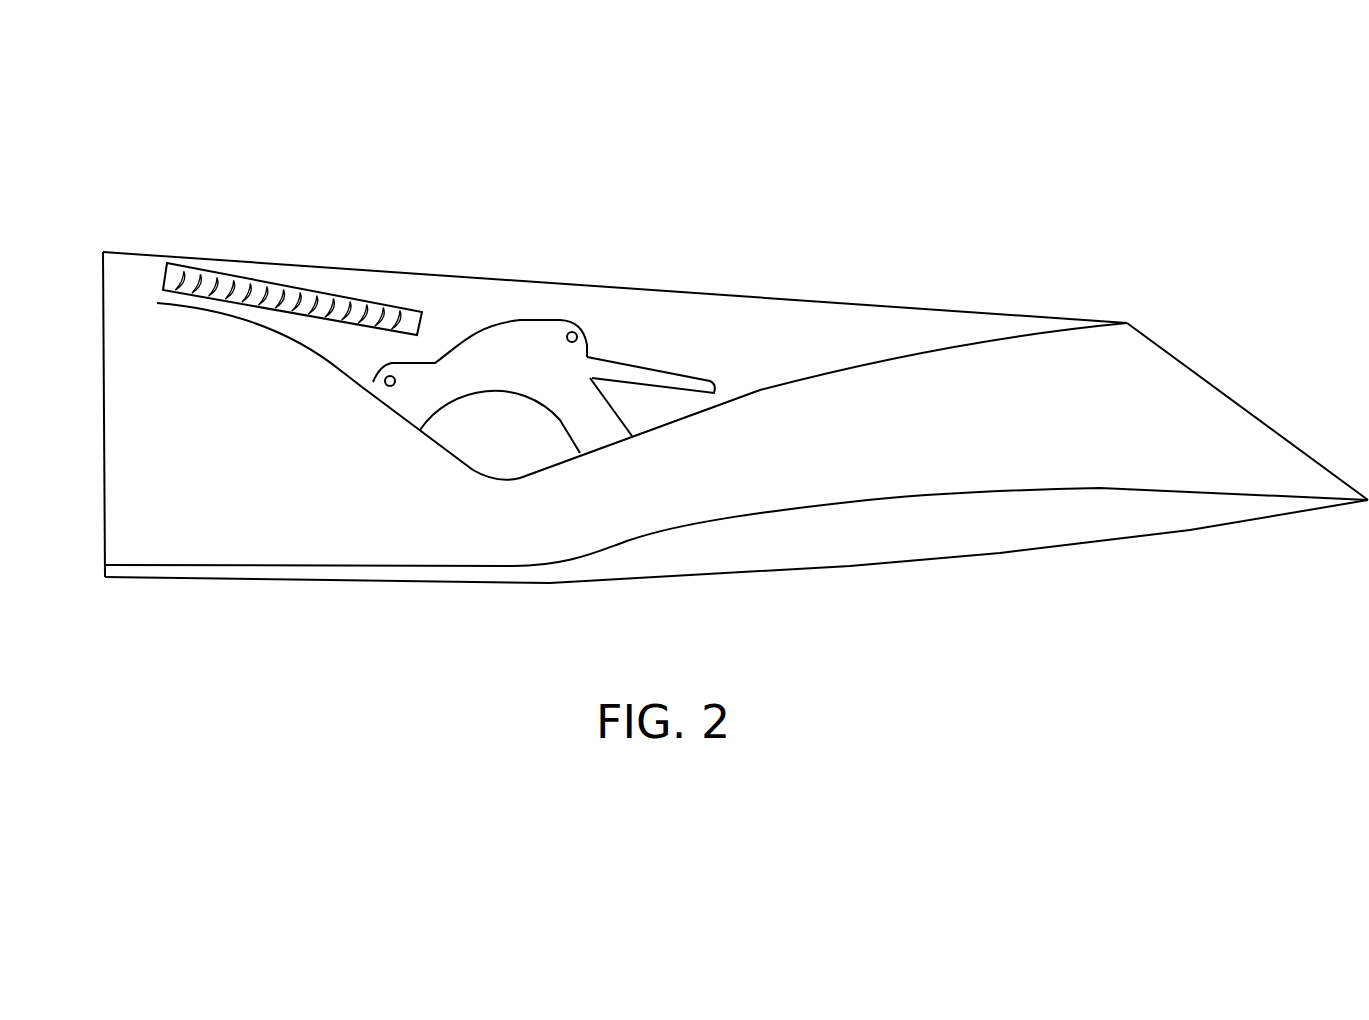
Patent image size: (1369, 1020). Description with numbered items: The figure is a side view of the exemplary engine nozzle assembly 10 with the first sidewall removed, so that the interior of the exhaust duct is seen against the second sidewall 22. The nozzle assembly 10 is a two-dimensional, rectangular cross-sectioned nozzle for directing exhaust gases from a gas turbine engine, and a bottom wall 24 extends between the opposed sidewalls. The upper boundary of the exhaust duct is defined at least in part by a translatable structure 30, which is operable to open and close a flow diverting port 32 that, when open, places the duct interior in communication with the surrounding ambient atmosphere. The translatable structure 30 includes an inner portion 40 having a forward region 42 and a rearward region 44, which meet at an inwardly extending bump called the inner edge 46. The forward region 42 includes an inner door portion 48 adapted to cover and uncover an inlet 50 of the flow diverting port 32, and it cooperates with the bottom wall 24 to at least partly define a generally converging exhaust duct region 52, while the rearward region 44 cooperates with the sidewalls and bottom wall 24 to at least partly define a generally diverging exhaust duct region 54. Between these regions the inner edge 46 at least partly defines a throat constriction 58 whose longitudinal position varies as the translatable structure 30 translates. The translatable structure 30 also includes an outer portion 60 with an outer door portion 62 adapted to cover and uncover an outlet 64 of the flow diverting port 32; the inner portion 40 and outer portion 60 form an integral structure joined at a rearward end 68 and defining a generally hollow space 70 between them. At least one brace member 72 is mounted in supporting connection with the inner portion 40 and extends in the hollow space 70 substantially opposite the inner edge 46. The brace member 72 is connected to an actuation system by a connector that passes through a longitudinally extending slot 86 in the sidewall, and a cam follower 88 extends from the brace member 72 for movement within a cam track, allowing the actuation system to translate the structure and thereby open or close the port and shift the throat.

The engine nozzle assembly 10 is at (1110, 130).
The second sidewall 22 is at (352, 541).
The bottom wall 24 is at (348, 573).
The translatable structure 30 is at (1033, 313).
The flow diverting port 32 is at (367, 300).
The inner portion 40 is at (858, 363).
The forward region 42 is at (387, 412).
The rearward region 44 is at (700, 410).
The inner edge 46 is at (507, 482).
The inner door portion 48 is at (197, 310).
The inlet 50 is at (278, 317).
The converging exhaust duct region 52 is at (237, 480).
The diverging exhaust duct region 54 is at (985, 455).
The throat constriction 58 is at (503, 520).
The outer portion 60 is at (590, 282).
The outer door portion 62 is at (217, 258).
The outlet 64 is at (272, 302).
The rearward end 68 is at (1077, 322).
The generally hollow space 70 is at (913, 325).
The brace member 72 is at (552, 385).
The longitudinally extending slot 86 is at (677, 380).
The cam follower 88 is at (567, 341).